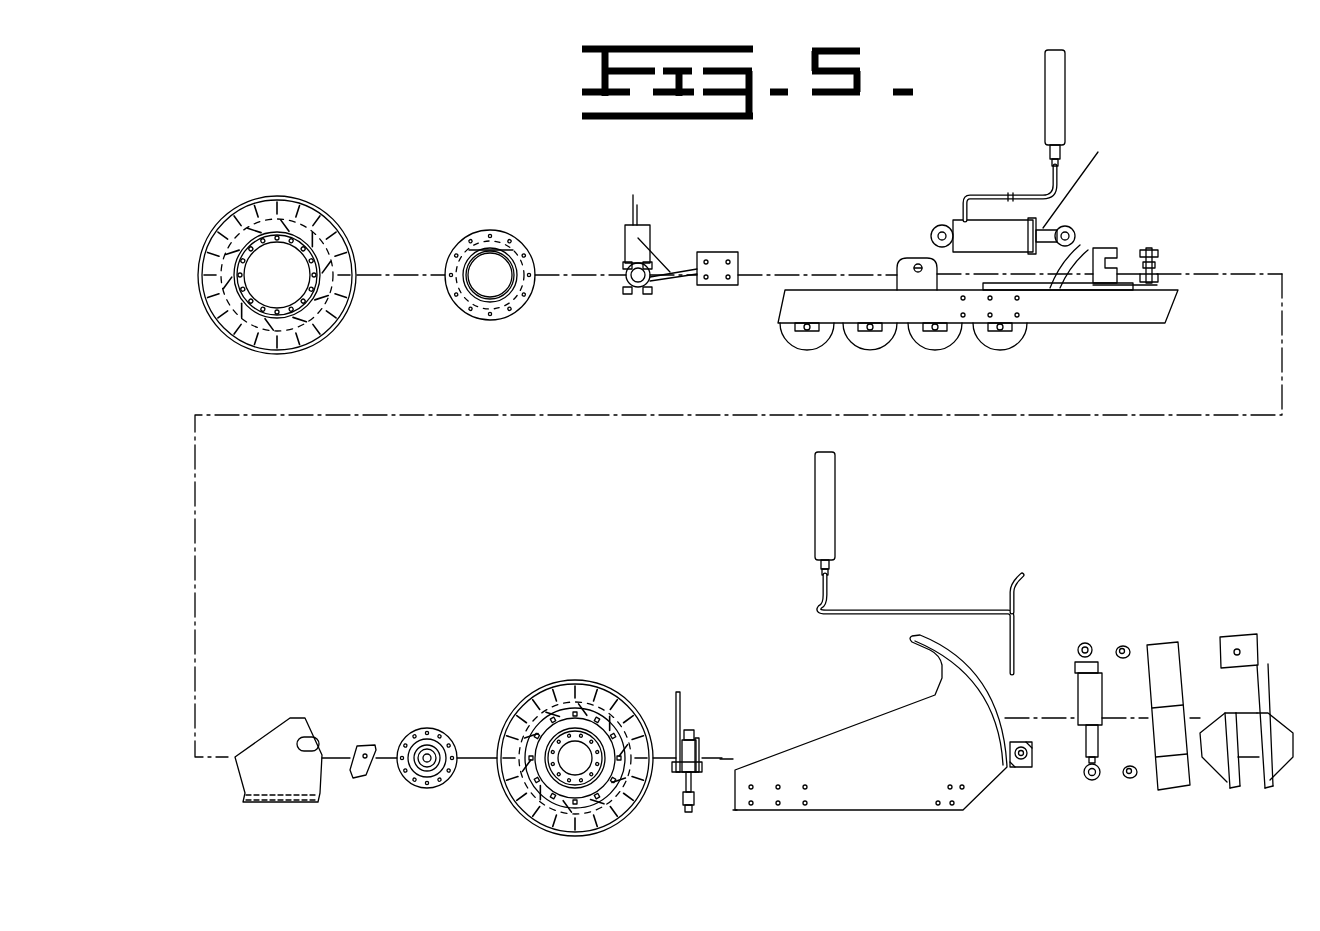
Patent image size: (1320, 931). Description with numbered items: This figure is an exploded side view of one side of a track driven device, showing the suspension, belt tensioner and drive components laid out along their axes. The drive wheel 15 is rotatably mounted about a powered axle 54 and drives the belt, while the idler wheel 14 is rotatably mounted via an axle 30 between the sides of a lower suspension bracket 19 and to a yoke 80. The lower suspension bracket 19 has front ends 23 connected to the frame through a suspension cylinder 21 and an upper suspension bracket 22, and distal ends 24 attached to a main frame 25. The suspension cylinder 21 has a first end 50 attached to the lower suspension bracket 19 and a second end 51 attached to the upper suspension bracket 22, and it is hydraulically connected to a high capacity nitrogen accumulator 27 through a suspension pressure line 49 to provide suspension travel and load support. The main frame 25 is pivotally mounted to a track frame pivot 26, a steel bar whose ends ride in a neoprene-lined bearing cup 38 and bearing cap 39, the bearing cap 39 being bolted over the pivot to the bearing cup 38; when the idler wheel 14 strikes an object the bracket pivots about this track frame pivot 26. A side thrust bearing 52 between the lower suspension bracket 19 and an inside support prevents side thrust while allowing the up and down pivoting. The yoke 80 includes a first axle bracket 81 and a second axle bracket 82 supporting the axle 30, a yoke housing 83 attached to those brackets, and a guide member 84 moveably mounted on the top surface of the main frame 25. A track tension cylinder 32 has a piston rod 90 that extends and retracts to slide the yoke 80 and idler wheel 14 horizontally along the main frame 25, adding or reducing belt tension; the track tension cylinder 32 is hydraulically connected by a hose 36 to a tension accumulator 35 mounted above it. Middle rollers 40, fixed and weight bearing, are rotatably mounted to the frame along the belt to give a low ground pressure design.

The idler wheel 14 is at (593, 668).
The drive wheel 15 is at (221, 199).
The lower suspension bracket 19 is at (888, 727).
The suspension cylinder 21 is at (1082, 680).
The upper suspension bracket 22 is at (1172, 642).
The front ends 23 is at (1021, 771).
The distal ends 24 is at (724, 826).
The main frame 25 is at (840, 300).
The track frame pivot 26 is at (653, 288).
The accumulator 27 is at (827, 522).
The axle 30 is at (403, 737).
The track tension cylinder 32 is at (962, 220).
The tension accumulator 35 is at (1047, 128).
The hose 36 is at (985, 197).
The bearing cup 38 is at (624, 288).
The bearing cap 39 is at (624, 262).
The middle rollers 40 is at (865, 345).
The suspension pressure line 49 is at (927, 612).
The first end 50 is at (1102, 773).
The second end 51 is at (1094, 645).
The side thrust bearing 52 is at (698, 713).
The powered axle 54 is at (465, 240).
The yoke 80 is at (1138, 233).
The first axle bracket 81 is at (1098, 252).
The second axle bracket 82 is at (1158, 268).
The yoke housing 83 is at (267, 743).
The guide member 84 is at (1070, 278).
The piston rod 90 is at (1084, 180).